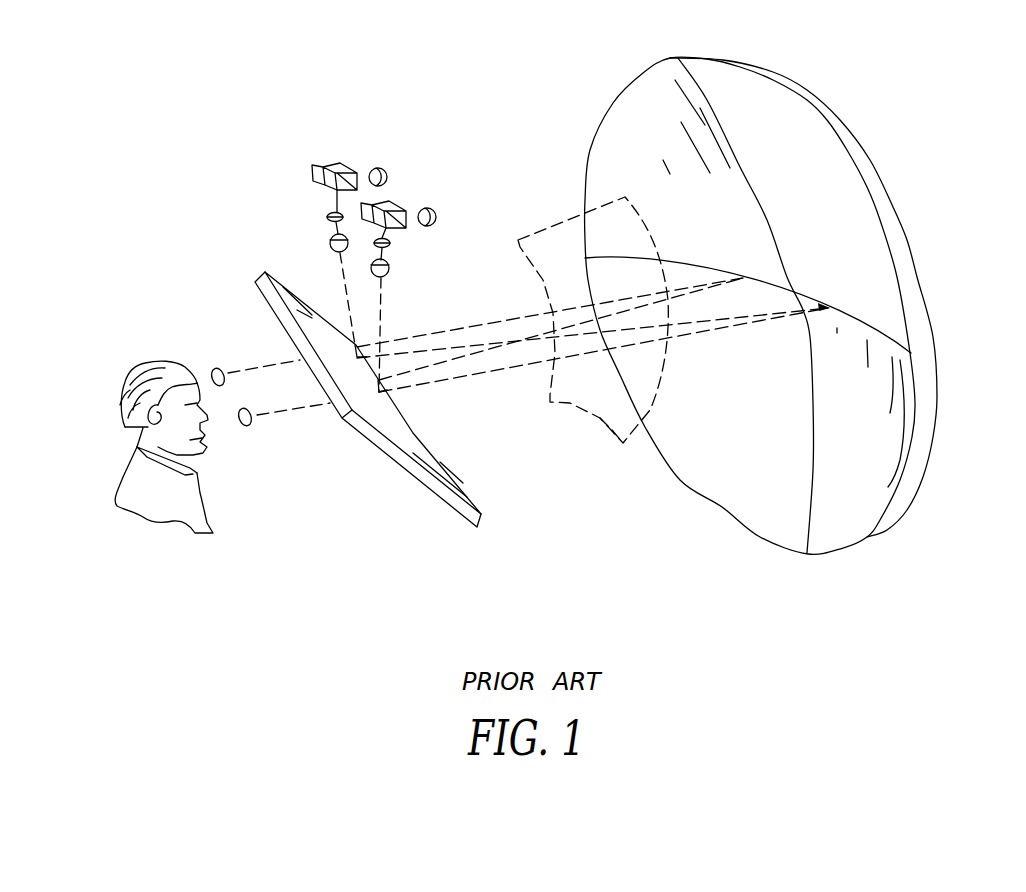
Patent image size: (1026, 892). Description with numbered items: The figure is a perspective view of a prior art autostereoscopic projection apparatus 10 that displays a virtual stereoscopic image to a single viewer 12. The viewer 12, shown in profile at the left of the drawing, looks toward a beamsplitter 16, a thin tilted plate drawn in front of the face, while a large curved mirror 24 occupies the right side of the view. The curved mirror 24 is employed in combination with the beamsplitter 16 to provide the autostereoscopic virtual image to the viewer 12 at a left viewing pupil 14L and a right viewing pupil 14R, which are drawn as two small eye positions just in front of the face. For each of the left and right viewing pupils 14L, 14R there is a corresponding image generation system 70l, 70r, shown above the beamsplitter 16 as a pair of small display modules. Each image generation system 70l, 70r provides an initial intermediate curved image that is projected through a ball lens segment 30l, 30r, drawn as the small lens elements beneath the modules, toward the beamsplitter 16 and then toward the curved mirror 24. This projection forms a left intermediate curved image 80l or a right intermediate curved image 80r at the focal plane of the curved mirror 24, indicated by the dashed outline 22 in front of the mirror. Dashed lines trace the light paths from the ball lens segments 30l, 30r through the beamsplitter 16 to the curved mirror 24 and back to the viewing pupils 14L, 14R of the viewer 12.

The autostereoscopic projection apparatus 10 is at (132, 98).
The viewer 12 is at (115, 390).
The left viewing pupil 14L is at (213, 367).
The right viewing pupil 14R is at (253, 423).
The beamsplitter 16 is at (483, 514).
The combiner / relay element 22 is at (570, 318).
The curved mirror 24 is at (872, 165).
The ball lens segment 30r is at (331, 240).
The ball lens segment 30l is at (388, 265).
The image generation system 70r is at (316, 144).
The image generation system 70l is at (412, 188).
The left intermediate curved image 80l is at (600, 418).
The right intermediate curved image 80r is at (574, 480).